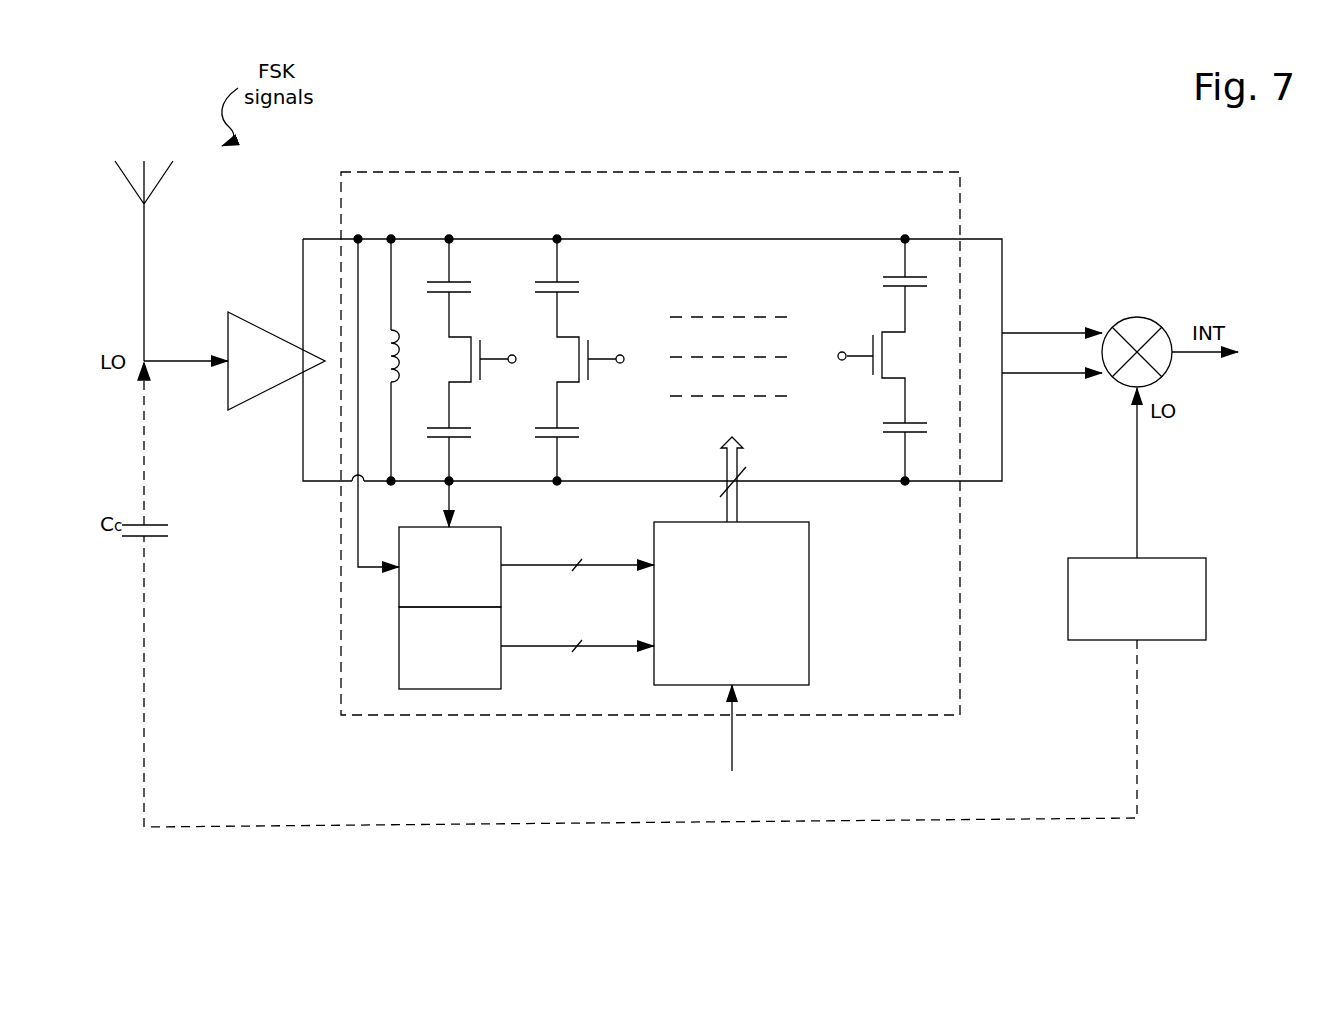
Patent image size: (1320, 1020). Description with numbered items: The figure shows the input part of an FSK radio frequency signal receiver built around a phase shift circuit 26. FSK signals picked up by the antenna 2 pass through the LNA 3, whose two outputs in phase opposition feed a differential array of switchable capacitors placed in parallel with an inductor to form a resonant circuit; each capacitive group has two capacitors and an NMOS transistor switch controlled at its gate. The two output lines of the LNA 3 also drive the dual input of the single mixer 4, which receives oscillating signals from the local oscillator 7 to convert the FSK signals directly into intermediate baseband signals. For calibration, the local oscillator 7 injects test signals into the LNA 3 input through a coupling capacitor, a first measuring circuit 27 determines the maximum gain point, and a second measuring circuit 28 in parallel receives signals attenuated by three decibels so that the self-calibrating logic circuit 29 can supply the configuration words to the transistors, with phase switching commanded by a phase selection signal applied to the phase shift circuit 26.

The antenna 2 is at (144, 263).
The LNA 3 is at (272, 338).
The mixer 4 is at (1131, 325).
The local oscillator 7 is at (1088, 572).
The phase shift circuit 26 is at (893, 172).
The first measuring circuit 27 is at (412, 588).
The second measuring circuit 28 is at (412, 665).
The self-calibrating logic circuit 29 is at (803, 580).